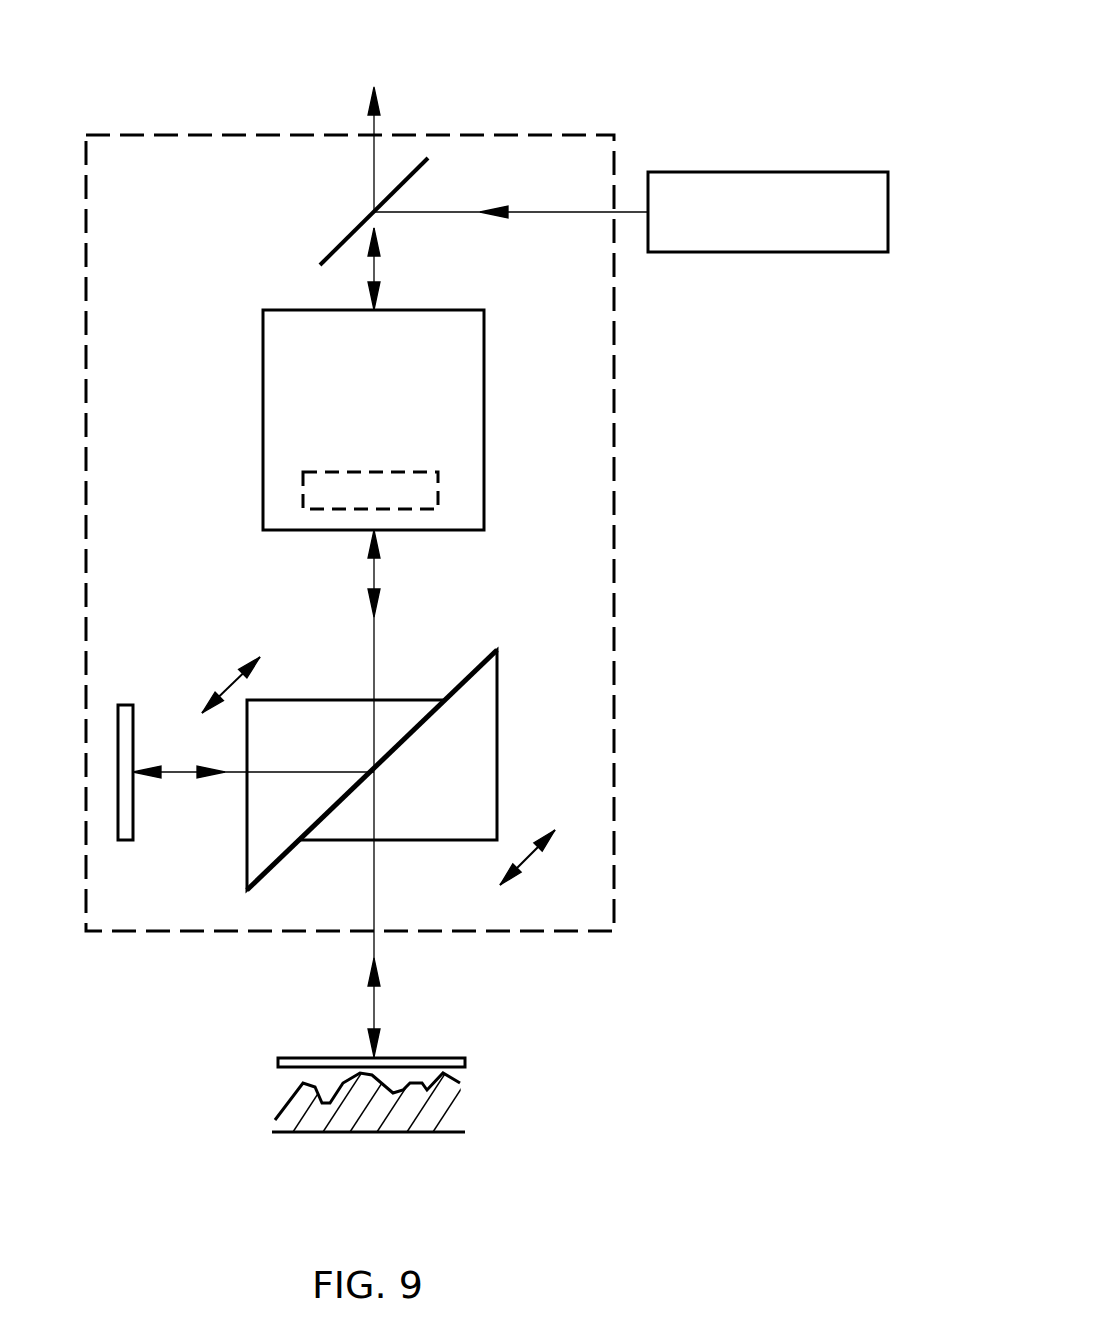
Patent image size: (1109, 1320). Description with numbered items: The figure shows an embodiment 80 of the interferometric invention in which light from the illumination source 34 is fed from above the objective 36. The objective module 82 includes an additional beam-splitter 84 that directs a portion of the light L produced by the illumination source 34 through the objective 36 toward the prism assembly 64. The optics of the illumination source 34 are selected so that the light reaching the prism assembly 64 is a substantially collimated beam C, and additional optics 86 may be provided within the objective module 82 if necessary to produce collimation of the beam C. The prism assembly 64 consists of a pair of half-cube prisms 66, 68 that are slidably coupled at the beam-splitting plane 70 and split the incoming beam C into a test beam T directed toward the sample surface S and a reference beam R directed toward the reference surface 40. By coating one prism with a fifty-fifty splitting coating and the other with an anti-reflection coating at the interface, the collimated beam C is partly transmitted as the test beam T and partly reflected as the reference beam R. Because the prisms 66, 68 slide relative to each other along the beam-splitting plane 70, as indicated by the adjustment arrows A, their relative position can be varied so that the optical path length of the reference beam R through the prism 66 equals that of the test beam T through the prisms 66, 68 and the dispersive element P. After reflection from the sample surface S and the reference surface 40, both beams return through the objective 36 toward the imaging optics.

The embodiment 80 is at (705, 100).
The objective module 82 is at (615, 452).
The illumination source 34 is at (878, 218).
The light L is at (630, 212).
The beam-splitter 84 is at (333, 250).
The objective 36 is at (266, 441).
The additional optics 86 is at (440, 490).
The collimated beam C is at (375, 580).
The prism assembly 64 is at (466, 755).
The half-cube prism 66 is at (347, 710).
The half-cube prism 68 is at (476, 730).
The beam-splitting plane 70 is at (393, 752).
The reference surface 40 is at (127, 705).
The reference beam R is at (182, 772).
The adjustment direction A is at (230, 690).
The test beam T is at (371, 905).
The dispersive element P is at (421, 1059).
The sample surface S is at (455, 1078).